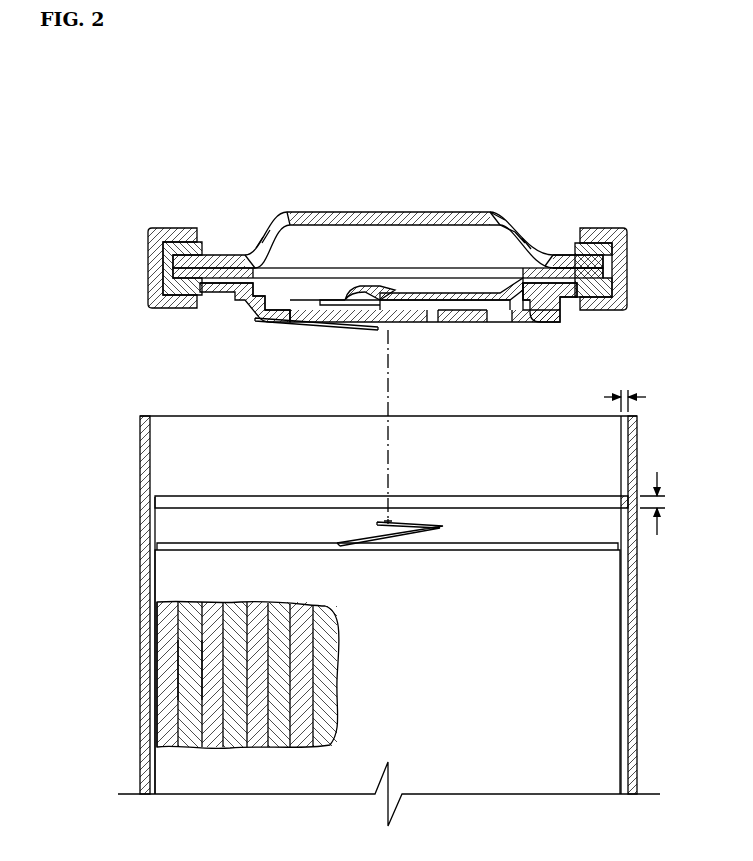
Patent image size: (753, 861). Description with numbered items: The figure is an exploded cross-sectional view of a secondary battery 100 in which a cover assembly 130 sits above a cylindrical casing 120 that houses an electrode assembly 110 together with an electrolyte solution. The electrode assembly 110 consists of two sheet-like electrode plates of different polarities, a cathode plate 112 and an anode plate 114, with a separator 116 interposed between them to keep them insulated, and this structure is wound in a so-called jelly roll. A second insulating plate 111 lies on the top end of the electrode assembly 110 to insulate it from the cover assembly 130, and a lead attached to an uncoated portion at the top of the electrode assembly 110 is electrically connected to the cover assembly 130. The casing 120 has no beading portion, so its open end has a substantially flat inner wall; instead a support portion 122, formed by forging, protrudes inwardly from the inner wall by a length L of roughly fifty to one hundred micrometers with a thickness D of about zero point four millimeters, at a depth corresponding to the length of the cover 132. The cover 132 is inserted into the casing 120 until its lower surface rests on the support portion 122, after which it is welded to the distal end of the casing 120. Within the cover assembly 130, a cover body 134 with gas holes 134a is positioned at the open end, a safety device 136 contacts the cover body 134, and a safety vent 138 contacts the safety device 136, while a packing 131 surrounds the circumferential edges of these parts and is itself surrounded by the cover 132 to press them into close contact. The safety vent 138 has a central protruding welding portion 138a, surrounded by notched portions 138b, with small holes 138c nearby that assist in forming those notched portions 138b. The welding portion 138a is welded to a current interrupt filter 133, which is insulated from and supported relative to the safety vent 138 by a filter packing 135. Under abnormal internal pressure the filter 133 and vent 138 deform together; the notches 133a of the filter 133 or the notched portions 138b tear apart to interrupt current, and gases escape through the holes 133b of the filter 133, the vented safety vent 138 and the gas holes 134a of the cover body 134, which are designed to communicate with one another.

The secondary battery 100 is at (99, 172).
The cover assembly 130 is at (178, 183).
The cover 132 is at (184, 228).
The cover body 134 is at (350, 212).
The holes 134a is at (515, 228).
The safety device 136 is at (556, 256).
The packing 131 is at (596, 232).
The safety vent 138 is at (612, 278).
The welding portion 138a is at (392, 304).
The notched portions 138b is at (364, 288).
The small holes 138c is at (430, 322).
The current interrupt filter 133 is at (525, 323).
The notches 133a is at (348, 322).
The holes 133b is at (488, 322).
The filter packing 135 is at (540, 312).
The casing 120 is at (135, 492).
The support portion 122 is at (155, 500).
The second insulating plate 111 is at (566, 544).
The electrode assembly 110 is at (150, 600).
The cathode plate 112 is at (168, 650).
The separator 116 is at (190, 678).
The anode plate 114 is at (212, 712).